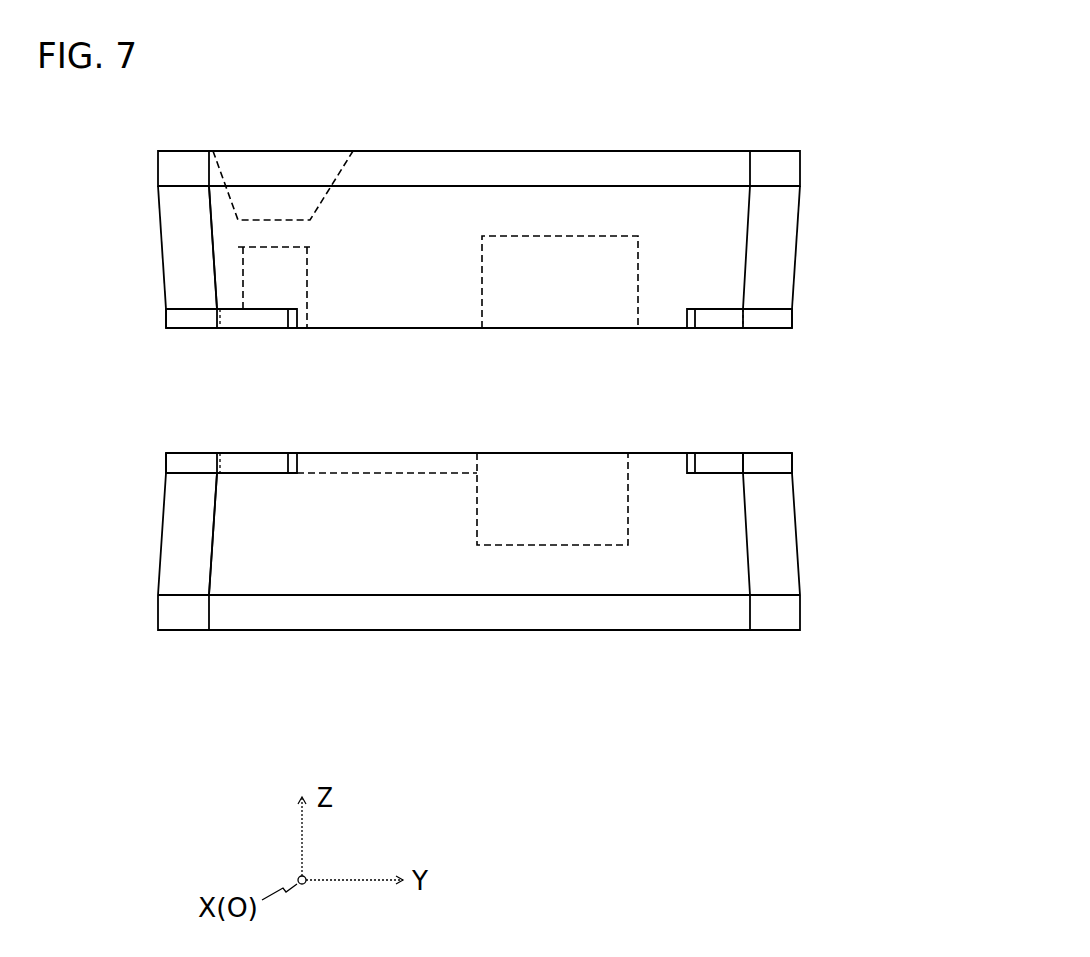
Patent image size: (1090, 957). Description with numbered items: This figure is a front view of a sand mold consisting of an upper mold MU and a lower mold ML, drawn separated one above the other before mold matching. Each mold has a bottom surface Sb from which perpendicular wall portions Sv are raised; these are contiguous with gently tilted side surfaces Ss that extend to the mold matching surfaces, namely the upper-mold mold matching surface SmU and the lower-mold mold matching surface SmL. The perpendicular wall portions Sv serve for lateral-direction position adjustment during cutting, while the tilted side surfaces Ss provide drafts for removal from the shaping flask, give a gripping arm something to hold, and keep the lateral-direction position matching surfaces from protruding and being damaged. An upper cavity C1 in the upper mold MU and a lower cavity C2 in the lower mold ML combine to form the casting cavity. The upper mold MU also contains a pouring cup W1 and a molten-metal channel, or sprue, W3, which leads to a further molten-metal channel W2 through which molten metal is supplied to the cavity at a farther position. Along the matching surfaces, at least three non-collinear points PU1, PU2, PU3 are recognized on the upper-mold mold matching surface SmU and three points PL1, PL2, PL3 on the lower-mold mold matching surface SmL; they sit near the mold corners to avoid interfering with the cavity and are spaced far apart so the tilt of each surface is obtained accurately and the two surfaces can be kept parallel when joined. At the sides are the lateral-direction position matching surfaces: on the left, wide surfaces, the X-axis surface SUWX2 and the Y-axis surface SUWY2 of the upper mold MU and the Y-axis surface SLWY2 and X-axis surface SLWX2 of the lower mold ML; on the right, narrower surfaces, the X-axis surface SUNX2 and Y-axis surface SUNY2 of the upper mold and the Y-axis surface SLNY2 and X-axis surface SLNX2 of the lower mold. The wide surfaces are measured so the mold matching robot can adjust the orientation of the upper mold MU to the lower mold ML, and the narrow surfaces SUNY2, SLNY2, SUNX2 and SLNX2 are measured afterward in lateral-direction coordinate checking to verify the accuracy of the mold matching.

The upper mold MU is at (731, 150).
The lower mold ML is at (721, 632).
The point PU1 is at (217, 328).
The point PU2 is at (221, 328).
The point PU3 is at (740, 328).
The point PL1 is at (218, 453).
The point PL2 is at (221, 453).
The point PL3 is at (742, 453).
The pouring cup W1 is at (263, 151).
The molten-metal channel W2 is at (357, 473).
The molten-metal channel (sprue) W3 is at (310, 265).
The upper cavity C1 is at (503, 236).
The lower cavity C2 is at (545, 545).
The gently tilted side surface Ss is at (238, 220).
The perpendicular wall portion Sv is at (403, 157).
The bottom surface Sb is at (652, 150).
The upper-mold mold matching surface SmU is at (539, 329).
The lower-mold mold matching surface SmL is at (542, 451).
The wide X-axis lateral-direction position matching surface SUWX2 is at (244, 318).
The wide Y-axis lateral-direction position matching surface SUWY2 is at (166, 318).
The narrow X-axis lateral-direction position matching surface SUNX2 is at (734, 318).
The narrow Y-axis lateral-direction position matching surface SUNY2 is at (794, 318).
The wide Y-axis lateral-direction position matching surface SLWY2 is at (164, 462).
The wide X-axis lateral-direction position matching surface SLWX2 is at (249, 463).
The narrow Y-axis lateral-direction position matching surface SLNY2 is at (794, 462).
The narrow X-axis lateral-direction position matching surface SLNX2 is at (723, 464).